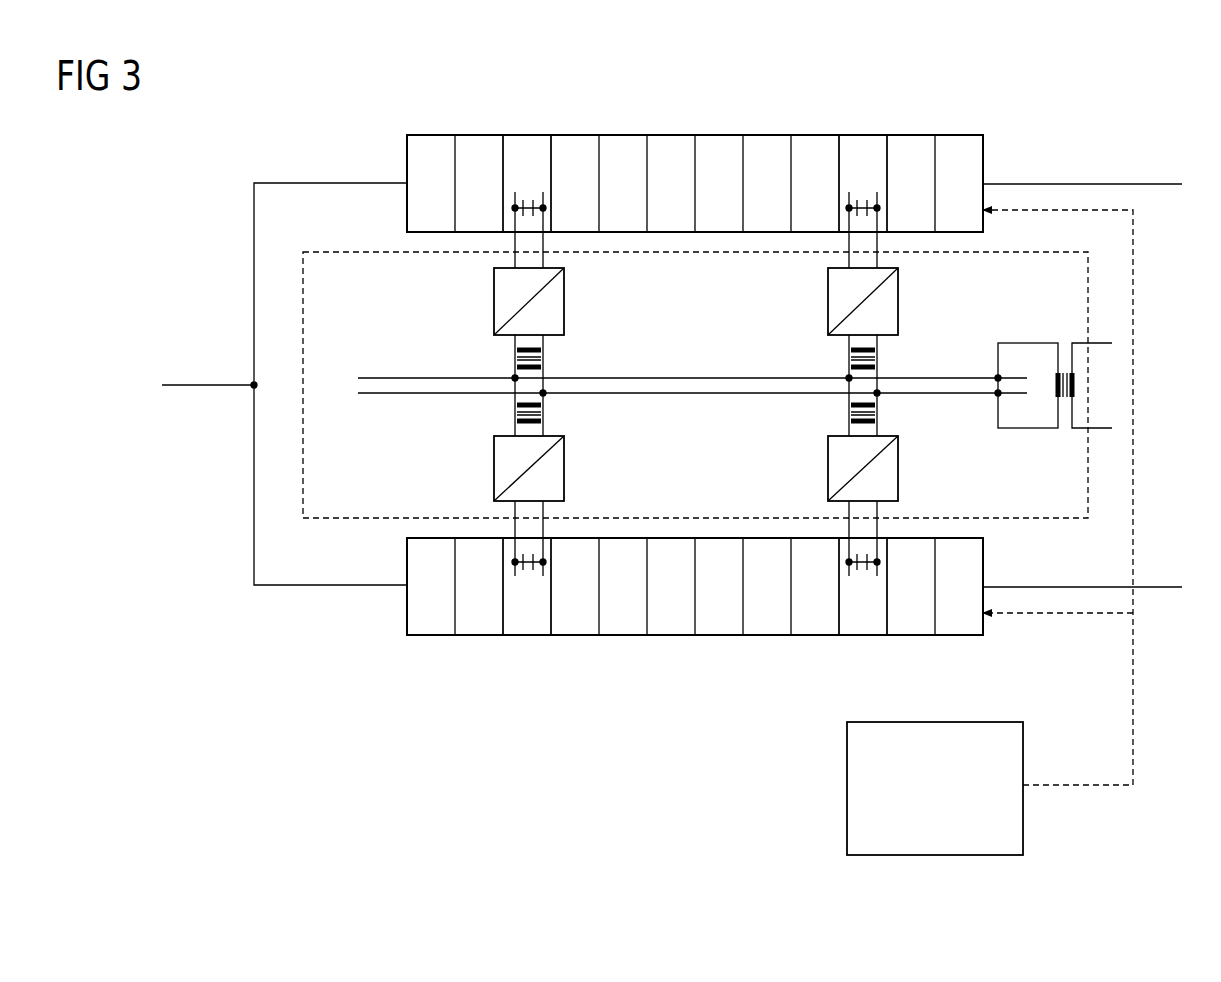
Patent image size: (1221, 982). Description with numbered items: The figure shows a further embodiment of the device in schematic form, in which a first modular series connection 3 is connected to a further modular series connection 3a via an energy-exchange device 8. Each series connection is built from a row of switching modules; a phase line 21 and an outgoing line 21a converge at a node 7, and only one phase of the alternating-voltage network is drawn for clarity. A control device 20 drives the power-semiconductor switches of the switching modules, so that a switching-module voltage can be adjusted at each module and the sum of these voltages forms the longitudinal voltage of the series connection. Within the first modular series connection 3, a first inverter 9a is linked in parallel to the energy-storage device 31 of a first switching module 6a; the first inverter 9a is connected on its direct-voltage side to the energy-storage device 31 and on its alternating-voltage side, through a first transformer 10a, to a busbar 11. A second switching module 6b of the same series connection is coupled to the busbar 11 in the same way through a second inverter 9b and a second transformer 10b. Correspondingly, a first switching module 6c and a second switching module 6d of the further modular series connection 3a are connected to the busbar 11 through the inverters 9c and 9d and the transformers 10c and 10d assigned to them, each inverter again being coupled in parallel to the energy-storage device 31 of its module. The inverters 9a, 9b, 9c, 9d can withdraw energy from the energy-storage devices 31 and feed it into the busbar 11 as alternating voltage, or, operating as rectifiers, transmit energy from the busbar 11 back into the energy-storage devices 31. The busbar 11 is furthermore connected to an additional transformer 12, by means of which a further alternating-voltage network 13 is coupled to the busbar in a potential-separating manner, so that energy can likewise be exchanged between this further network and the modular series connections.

The first modular series connection 3 is at (407, 155).
The further modular series connection 3a is at (407, 612).
The first switching module 6a is at (528, 135).
The second switching module 6b is at (865, 135).
The first switching module 6c is at (528, 635).
The second switching module 6d is at (865, 635).
The node 7 is at (254, 385).
The energy-exchange device 8 is at (319, 518).
The first inverter 9a is at (494, 300).
The second inverter 9b is at (828, 300).
The inverter 9c is at (494, 467).
The inverter 9d is at (828, 467).
The first transformer 10a is at (562, 353).
The second transformer 10b is at (896, 353).
The transformer 10c is at (562, 412).
The transformer 10d is at (896, 412).
The busbar 11 is at (372, 371).
The additional transformer 12 is at (1075, 390).
The further alternating-voltage network 13 is at (1104, 428).
The control device 20 is at (847, 785).
The phase line 21 is at (312, 183).
The outgoing line 21a is at (313, 585).
The energy-storage device 31 is at (531, 199).